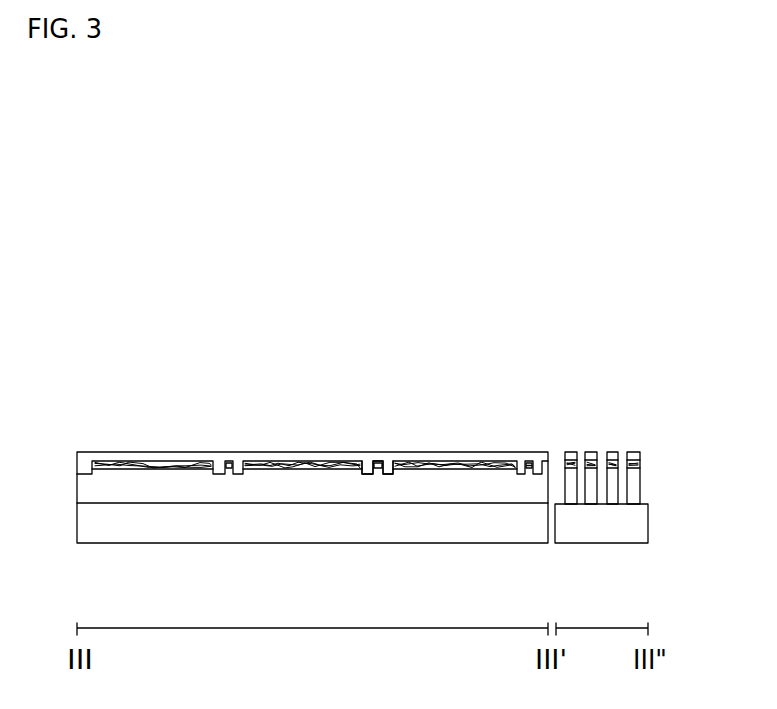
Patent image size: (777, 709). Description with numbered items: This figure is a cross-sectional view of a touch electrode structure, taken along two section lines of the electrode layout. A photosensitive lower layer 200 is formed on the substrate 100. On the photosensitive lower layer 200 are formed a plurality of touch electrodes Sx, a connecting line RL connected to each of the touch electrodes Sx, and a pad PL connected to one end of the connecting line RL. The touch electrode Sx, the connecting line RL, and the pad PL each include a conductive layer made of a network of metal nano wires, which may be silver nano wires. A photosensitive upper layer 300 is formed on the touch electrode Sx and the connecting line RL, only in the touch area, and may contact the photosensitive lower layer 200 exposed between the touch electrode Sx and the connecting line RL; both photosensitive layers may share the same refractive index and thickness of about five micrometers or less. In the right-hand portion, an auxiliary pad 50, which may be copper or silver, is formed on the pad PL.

The substrate 100 is at (487, 545).
The photosensitive lower layer 200 is at (148, 492).
The photosensitive upper layer 300 is at (368, 465).
The auxiliary pad 50 is at (571, 451).
The touch electrode Sx is at (442, 465).
The connecting line RL is at (528, 461).
The pad PL is at (641, 462).